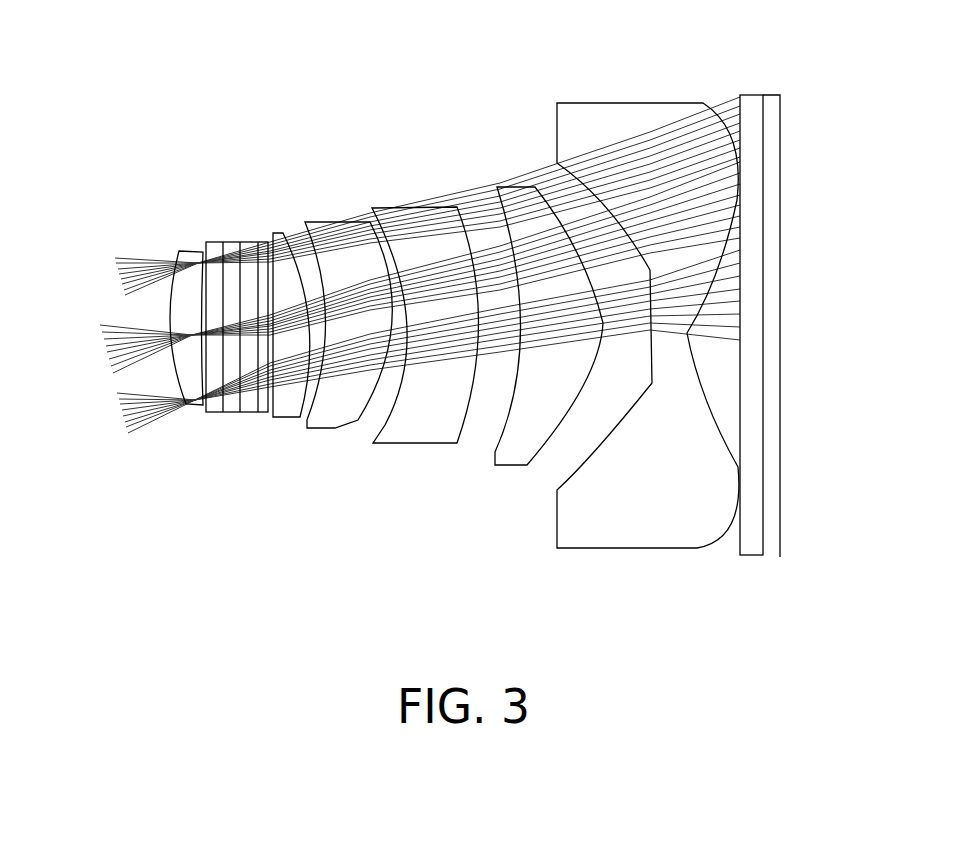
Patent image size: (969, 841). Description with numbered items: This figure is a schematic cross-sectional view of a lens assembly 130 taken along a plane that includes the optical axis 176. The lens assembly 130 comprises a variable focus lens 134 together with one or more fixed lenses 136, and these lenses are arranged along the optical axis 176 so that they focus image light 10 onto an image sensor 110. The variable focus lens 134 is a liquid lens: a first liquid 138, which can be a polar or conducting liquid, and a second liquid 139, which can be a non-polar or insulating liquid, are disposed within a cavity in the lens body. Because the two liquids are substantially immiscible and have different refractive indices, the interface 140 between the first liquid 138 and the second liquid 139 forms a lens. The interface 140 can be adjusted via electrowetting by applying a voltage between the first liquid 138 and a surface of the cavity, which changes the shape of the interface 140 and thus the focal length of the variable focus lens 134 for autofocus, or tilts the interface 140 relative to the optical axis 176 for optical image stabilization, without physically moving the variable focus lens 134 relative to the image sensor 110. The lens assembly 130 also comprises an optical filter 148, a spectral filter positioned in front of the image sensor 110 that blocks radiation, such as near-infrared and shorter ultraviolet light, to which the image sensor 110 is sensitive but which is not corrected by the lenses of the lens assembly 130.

The image light 10 is at (84, 382).
The image sensor 110 is at (828, 342).
The lens assembly 130 is at (285, 43).
The variable focus lens 134 is at (175, 277).
The fixed lenses 136 is at (411, 363).
The first liquid 138 is at (170, 373).
The second liquid 139 is at (181, 388).
The interface 140 is at (309, 281).
The optical filter 148 is at (811, 360).
The optical axis 176 is at (371, 265).